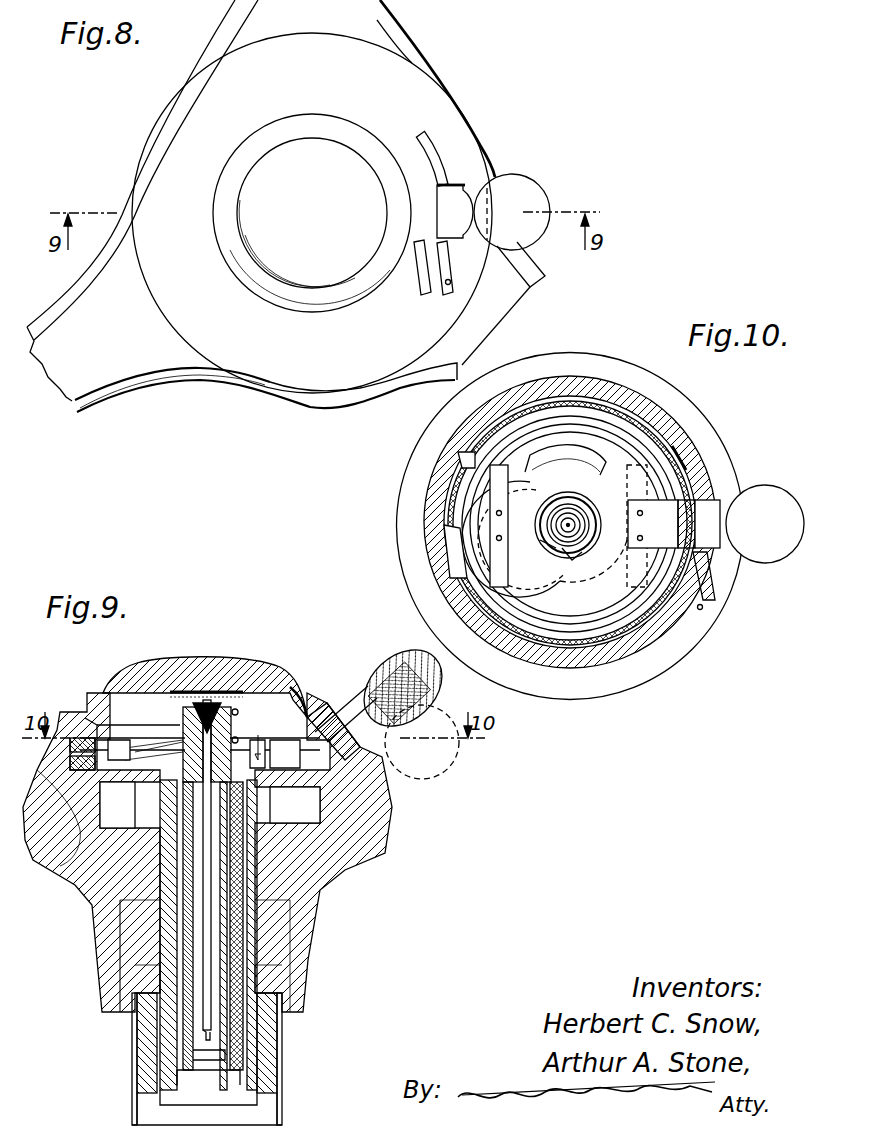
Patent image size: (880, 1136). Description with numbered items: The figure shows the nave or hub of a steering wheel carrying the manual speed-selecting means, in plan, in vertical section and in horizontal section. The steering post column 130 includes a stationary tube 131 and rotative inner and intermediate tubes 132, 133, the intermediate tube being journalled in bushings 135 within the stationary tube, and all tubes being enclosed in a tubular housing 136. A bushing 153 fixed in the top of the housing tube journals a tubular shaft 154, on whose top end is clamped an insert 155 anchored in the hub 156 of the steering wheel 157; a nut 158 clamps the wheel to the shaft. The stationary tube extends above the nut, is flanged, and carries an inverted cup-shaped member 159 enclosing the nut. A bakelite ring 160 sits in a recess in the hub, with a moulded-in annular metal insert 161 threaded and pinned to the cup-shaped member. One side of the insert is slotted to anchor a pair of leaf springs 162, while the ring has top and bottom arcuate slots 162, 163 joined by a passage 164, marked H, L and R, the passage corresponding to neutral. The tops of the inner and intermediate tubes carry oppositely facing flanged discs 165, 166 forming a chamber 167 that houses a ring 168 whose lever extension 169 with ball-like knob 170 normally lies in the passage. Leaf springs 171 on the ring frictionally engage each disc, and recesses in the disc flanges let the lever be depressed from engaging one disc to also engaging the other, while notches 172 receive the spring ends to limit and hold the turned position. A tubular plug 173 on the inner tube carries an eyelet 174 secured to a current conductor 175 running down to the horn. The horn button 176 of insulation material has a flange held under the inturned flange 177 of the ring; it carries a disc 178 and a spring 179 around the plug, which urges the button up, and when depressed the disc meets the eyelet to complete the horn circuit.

In FIG. 9, the steering post column 130 is at (445, 808).
In FIG. 9, the stationary tube 131 is at (225, 1098).
In FIG. 9, the inner tube 132 is at (209, 1050).
In FIG. 9, the intermediate tube 133 is at (222, 1075).
In FIG. 9, the bushings 135 is at (245, 910).
In FIG. 9, the tubular housing 136 is at (282, 1092).
In FIG. 9, the bushing 153 is at (280, 1055).
In FIG. 9, the tubular shaft 154 is at (255, 1025).
In FIG. 9, the insert 155 is at (120, 925).
In FIG. 10, the hub 156 is at (594, 351).
In FIG. 9, the hub 156 is at (105, 970).
In FIG. 8, the steering wheel 157 is at (118, 402).
In FIG. 9, the nut 158 is at (290, 810).
In FIG. 9, the inverted cup-shaped member 159 is at (35, 865).
In FIG. 8, the ring 160 is at (312, 213).
In FIG. 9, the ring 160 is at (60, 744).
In FIG. 10, the annular metal insert 161 is at (580, 678).
In FIG. 9, the annular metal insert 161 is at (62, 724).
In FIG. 8, the leaf springs / arcuate slot 162 is at (426, 262).
In FIG. 10, the leaf springs / arcuate slot 162 is at (682, 462).
In FIG. 9, the leaf springs / arcuate slot 162 is at (74, 736).
In FIG. 8, the arcuate slot 163 is at (450, 282).
In FIG. 10, the arcuate slot 163 is at (703, 609).
In FIG. 8, the passage 164 is at (443, 183).
In FIG. 10, the passage 164 is at (715, 585).
In FIG. 10, the flanged disc 165 is at (565, 460).
In FIG. 9, the flanged disc 165 is at (145, 712).
In FIG. 9, the flanged disc 166 is at (118, 805).
In FIG. 9, the chamber 167 is at (262, 738).
In FIG. 10, the ring 168 is at (562, 524).
In FIG. 9, the ring 168 is at (150, 742).
In FIG. 10, the lever extension 169 is at (712, 508).
In FIG. 9, the lever extension 169 is at (372, 690).
In FIG. 10, the ball-like knob 170 is at (760, 562).
In FIG. 9, the ball-like knob 170 is at (412, 660).
In FIG. 10, the leaf springs 171 is at (504, 580).
In FIG. 9, the leaf springs 171 is at (125, 740).
In FIG. 10, the notches 172 is at (477, 478).
In FIG. 10, the tubular plug 173 is at (584, 562).
In FIG. 9, the tubular plug 173 is at (246, 714).
In FIG. 10, the eyelet 174 is at (539, 553).
In FIG. 9, the eyelet 174 is at (224, 692).
In FIG. 9, the current conductor 175 is at (200, 1040).
In FIG. 8, the button 176 is at (312, 213).
In FIG. 9, the button 176 is at (198, 690).
In FIG. 8, the inturned flange 177 is at (243, 272).
In FIG. 10, the inturned flange 177 is at (643, 648).
In FIG. 9, the inturned flange 177 is at (326, 700).
In FIG. 9, the disc 178 is at (256, 672).
In FIG. 10, the spring 179 is at (548, 516).
In FIG. 9, the spring 179 is at (181, 700).